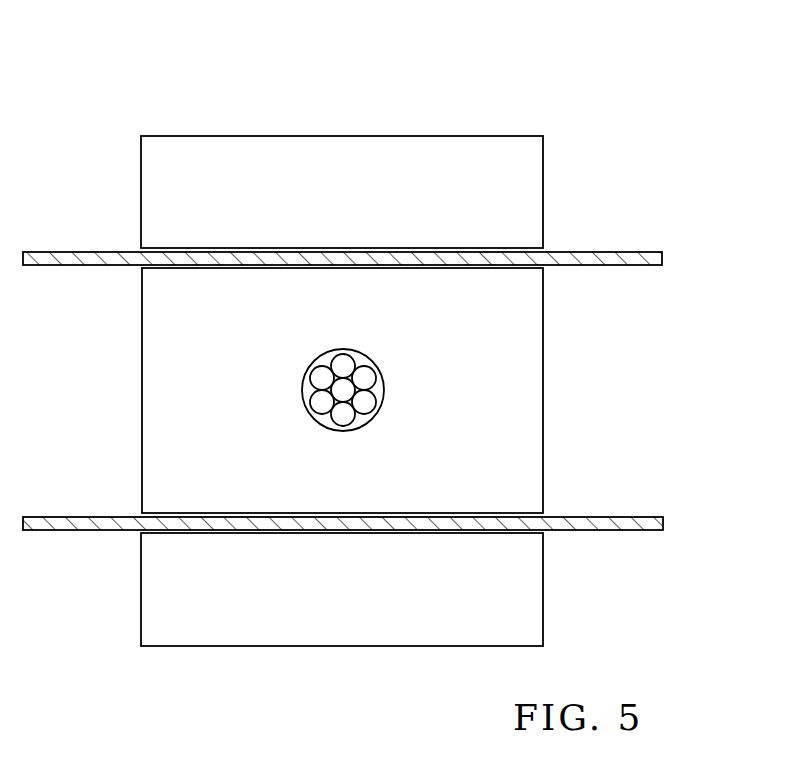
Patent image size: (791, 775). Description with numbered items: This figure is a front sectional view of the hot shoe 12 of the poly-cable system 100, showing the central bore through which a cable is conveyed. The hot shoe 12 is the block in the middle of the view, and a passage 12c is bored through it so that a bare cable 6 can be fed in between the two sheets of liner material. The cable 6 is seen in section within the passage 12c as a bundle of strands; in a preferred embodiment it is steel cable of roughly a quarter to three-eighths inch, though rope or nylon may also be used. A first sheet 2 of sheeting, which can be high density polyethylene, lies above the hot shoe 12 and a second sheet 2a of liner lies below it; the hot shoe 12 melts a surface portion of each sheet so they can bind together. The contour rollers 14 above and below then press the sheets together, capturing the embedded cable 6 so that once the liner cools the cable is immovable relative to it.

The poly-cable system 100 is at (566, 131).
The contour rollers 14 is at (141, 192).
The first sheet (sheeting) 2 is at (589, 251).
The second sheet (liner) 2a is at (576, 531).
The hot shoe 12 is at (142, 419).
The passage 12c is at (302, 381).
The cable 6 is at (384, 393).